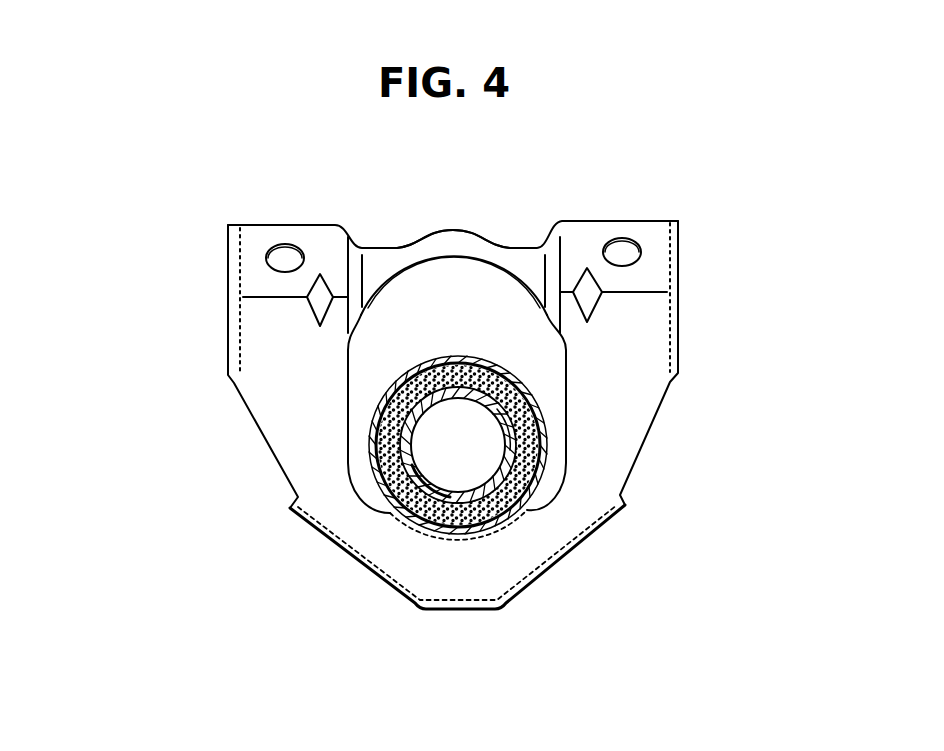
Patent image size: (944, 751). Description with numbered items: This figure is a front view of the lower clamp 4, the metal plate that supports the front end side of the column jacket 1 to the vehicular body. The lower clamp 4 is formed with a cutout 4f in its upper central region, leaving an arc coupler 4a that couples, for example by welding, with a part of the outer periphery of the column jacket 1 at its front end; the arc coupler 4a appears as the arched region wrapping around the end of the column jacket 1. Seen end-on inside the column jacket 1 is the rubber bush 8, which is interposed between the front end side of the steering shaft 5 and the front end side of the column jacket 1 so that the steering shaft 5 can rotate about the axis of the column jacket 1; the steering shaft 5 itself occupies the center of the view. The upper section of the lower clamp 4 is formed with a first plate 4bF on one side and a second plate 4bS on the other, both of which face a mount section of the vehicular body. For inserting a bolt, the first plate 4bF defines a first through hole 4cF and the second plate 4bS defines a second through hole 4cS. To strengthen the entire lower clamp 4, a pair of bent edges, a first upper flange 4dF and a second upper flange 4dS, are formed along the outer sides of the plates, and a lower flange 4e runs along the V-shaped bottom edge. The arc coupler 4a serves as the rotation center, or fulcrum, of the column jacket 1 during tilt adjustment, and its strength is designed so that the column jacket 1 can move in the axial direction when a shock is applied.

The lower clamp 4 is at (650, 215).
The arc coupler 4a is at (467, 540).
The first plate 4bF is at (253, 243).
The second plate 4bS is at (657, 273).
The first through hole 4cF is at (285, 243).
The second through hole 4cS is at (622, 240).
The first upper flange 4dF is at (225, 337).
The second upper flange 4dS is at (682, 335).
The lower flange 4e is at (550, 567).
The cutout 4f is at (442, 285).
The rubber bush 8 is at (423, 383).
The column jacket 1 is at (455, 392).
The steering shaft 5 is at (450, 497).